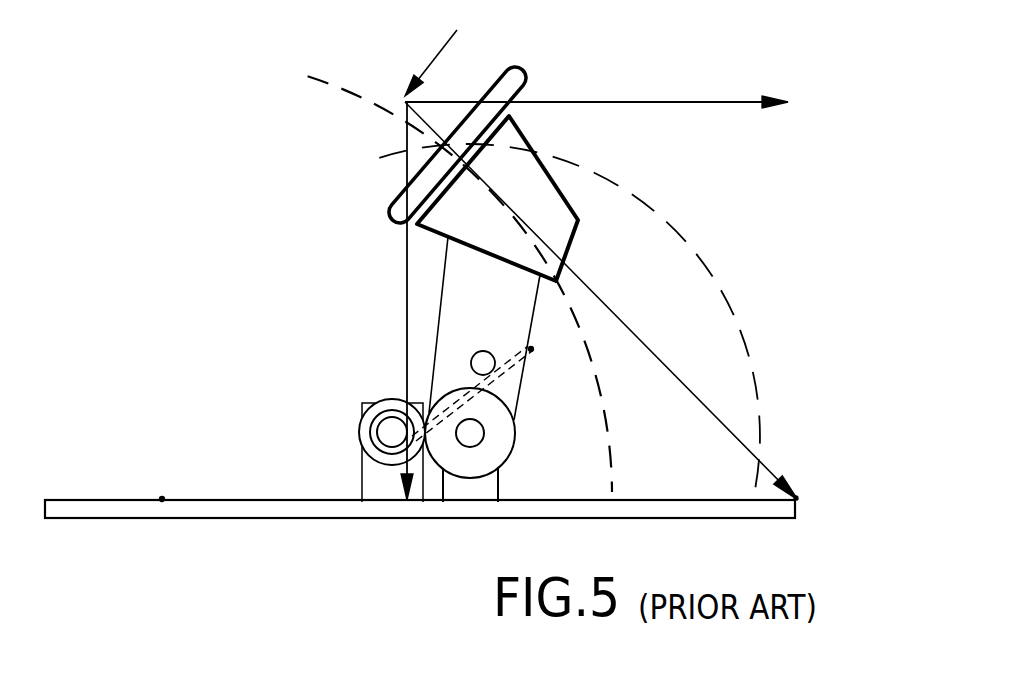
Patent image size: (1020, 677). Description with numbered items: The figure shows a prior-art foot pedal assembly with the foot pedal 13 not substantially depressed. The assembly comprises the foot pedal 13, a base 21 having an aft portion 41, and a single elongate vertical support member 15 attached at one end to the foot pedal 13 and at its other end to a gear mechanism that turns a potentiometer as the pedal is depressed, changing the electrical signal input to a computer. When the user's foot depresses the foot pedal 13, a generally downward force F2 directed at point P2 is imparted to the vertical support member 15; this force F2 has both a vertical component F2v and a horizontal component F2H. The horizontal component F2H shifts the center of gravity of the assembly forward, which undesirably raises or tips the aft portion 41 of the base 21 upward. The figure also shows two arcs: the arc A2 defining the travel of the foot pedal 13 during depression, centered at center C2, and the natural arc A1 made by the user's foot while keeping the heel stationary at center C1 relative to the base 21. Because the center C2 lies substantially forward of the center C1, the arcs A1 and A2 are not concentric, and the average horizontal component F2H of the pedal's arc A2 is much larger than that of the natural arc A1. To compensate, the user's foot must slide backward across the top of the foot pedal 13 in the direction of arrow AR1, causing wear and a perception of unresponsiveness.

The foot pedal 13 is at (530, 80).
The vertical support member 15 is at (437, 364).
The base 21 is at (203, 500).
The aft portion of the base 41 is at (143, 499).
The arrow AR1 is at (450, 48).
The natural arc A1 is at (370, 98).
The arc of foot pedal travel A2 is at (687, 231).
The center of natural arc C1 is at (163, 501).
The center of arc A2 C2 is at (473, 434).
The downward force F2 is at (613, 311).
The horizontal component of force F2 F2H is at (690, 102).
The vertical component of force F2 F2v is at (407, 262).
The point of force application P2 is at (800, 497).